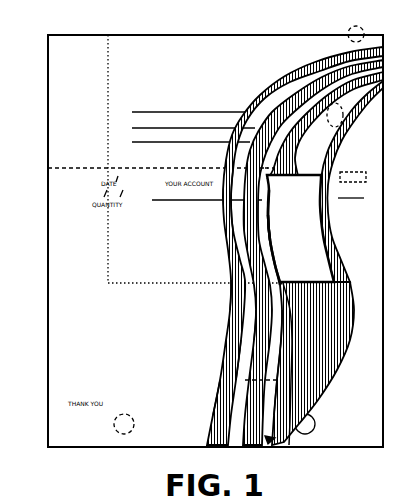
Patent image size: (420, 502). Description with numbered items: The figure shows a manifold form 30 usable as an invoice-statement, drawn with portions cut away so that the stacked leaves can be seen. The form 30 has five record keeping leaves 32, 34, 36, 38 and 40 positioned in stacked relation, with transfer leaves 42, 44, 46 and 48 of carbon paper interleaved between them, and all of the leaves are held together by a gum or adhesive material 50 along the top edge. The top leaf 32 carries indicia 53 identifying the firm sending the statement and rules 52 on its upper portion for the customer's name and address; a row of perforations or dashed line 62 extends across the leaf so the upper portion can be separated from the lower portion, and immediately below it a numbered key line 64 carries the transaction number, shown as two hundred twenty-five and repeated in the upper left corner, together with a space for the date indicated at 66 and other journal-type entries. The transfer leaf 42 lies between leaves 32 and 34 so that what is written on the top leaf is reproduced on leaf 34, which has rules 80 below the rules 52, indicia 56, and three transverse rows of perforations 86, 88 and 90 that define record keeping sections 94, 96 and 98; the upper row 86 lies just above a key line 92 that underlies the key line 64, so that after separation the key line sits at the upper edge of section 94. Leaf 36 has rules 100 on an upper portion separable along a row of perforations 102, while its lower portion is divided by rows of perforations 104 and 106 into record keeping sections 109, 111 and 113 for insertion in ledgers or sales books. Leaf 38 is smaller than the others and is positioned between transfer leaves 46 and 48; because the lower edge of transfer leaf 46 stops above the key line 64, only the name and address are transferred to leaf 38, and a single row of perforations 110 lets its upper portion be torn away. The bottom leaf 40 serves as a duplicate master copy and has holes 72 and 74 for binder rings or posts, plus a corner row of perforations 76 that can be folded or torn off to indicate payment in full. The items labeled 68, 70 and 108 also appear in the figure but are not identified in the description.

The manifold form 30 is at (227, 29).
The top record keeping leaf 32 is at (62, 376).
The record keeping leaf 34 is at (244, 352).
The record keeping leaf 36 is at (262, 218).
The record keeping leaf 38 is at (326, 253).
The bottom record keeping leaf 40 is at (362, 230).
The transfer leaf 42 is at (238, 249).
The transfer leaf 44 is at (272, 256).
The transfer leaf 46 is at (325, 125).
The transfer leaf 48 is at (331, 343).
The gum or adhesive material 50 is at (80, 34).
The rules 52 is at (157, 111).
The indicia 53 is at (171, 68).
The indicia 56 is at (176, 201).
The perforations or dashed line 62 is at (94, 152).
The key line 64 is at (53, 195).
The date indicia 66 is at (113, 152).
The paid stamp area 68 is at (337, 148).
The right edge 70 is at (389, 153).
The hole or opening 72 is at (316, 426).
The hole or opening 74 is at (116, 426).
The row of perforations 76 is at (357, 27).
The rules 80 is at (230, 120).
The row of perforations 86 is at (228, 152).
The row of perforations 88 is at (228, 284).
The row of perforations 90 is at (240, 374).
The key line 92 is at (419, 202).
The record keeping section 94 is at (236, 219).
The record keeping section 96 is at (251, 323).
The record keeping section 98 is at (215, 410).
The rules 100 is at (292, 67).
The row of perforations 102 is at (259, 178).
The row of perforations 104 is at (273, 276).
The row of perforations 106 is at (266, 368).
The bottom corner 108 is at (270, 442).
The record keeping section 109 is at (269, 236).
The row of perforations 110 is at (337, 126).
The record keeping section 111 is at (287, 316).
The record keeping section 113 is at (272, 398).